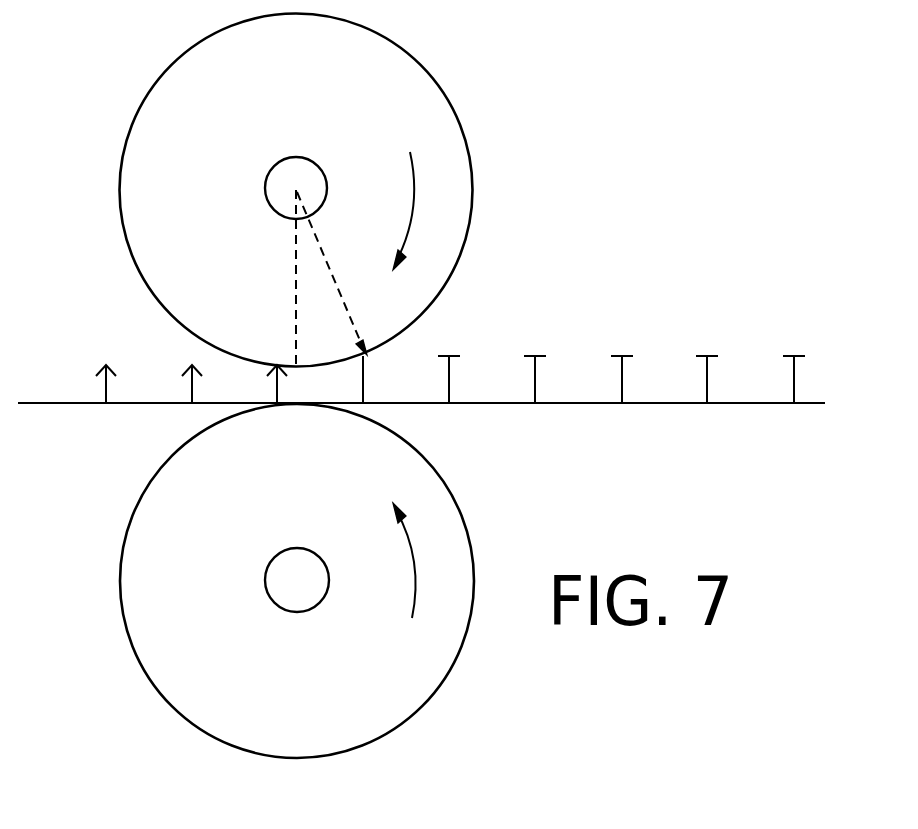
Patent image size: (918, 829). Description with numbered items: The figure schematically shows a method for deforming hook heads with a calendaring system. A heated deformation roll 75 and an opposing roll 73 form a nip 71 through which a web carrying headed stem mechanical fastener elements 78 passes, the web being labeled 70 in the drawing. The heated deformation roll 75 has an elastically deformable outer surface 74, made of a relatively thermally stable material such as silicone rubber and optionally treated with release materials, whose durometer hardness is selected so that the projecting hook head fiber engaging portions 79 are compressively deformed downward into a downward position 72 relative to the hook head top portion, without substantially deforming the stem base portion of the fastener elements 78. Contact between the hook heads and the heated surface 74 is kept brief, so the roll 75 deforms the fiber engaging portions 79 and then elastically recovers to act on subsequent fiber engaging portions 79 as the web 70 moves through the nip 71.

The web 70 is at (664, 408).
The nip 71 is at (445, 321).
The downward position 72 is at (192, 364).
The roll 73 is at (143, 493).
The heated deformation roll outer surface 74 is at (327, 360).
The heated deformation roll 75 is at (143, 98).
The headed stem mechanical fastener element 78 is at (535, 383).
The hook head fiber engaging portion 79 is at (790, 355).